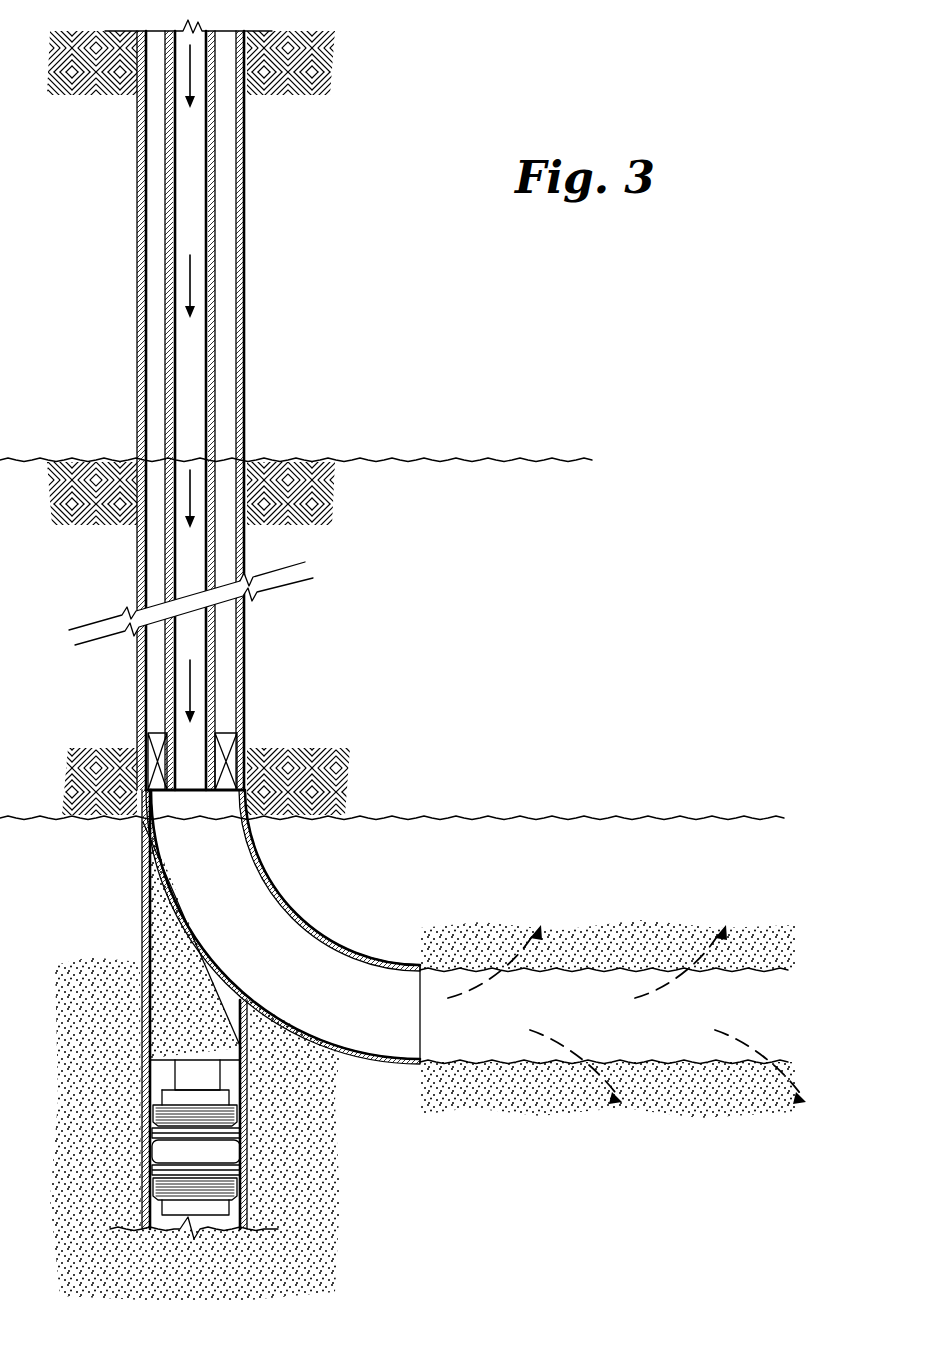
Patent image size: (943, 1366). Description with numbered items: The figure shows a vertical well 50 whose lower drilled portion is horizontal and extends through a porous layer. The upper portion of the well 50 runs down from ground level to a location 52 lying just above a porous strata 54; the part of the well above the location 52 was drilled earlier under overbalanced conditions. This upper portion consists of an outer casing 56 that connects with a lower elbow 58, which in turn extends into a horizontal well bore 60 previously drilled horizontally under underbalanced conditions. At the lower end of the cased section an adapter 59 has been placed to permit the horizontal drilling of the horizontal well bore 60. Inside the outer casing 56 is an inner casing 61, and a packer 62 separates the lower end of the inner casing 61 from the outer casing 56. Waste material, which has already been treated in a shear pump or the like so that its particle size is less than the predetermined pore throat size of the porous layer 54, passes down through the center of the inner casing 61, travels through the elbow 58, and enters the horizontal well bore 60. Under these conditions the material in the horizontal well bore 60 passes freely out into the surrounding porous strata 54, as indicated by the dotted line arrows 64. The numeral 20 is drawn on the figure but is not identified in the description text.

The tubing string 20 is at (190, 278).
The vertical well 50 is at (244, 183).
The location 52 is at (432, 818).
The porous strata 54 is at (605, 850).
The outer casing 56 is at (244, 310).
The lower elbow 58 is at (297, 912).
The adapter 59 is at (160, 940).
The horizontal well bore 60 is at (748, 1005).
The inner casing 61 is at (167, 358).
The packer 62 is at (141, 730).
The dotted line arrows 64 is at (745, 1037).